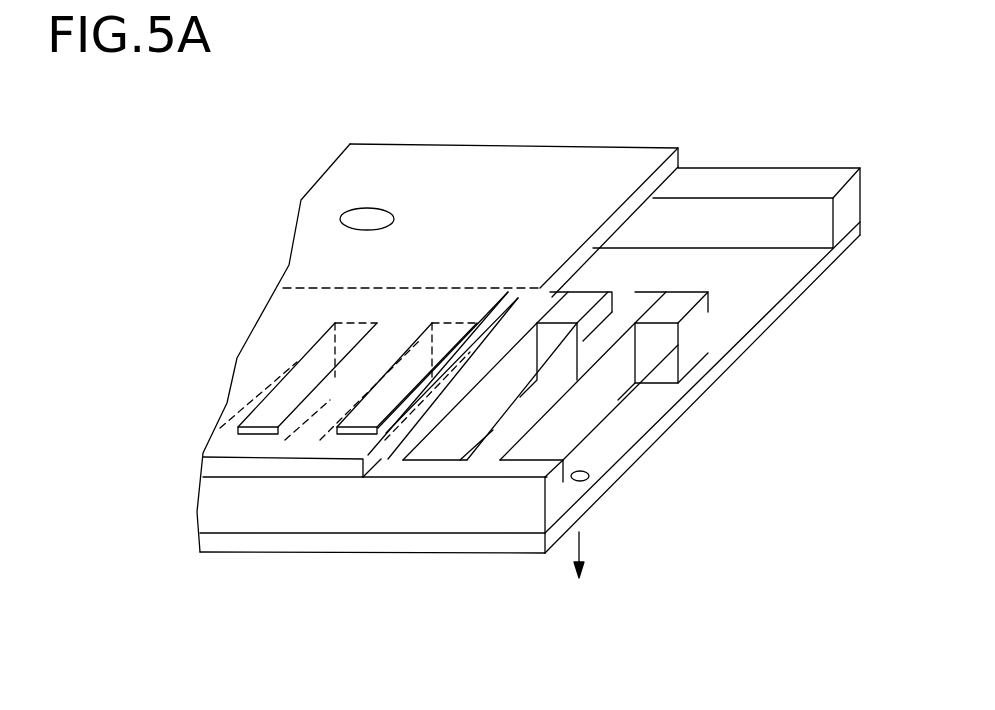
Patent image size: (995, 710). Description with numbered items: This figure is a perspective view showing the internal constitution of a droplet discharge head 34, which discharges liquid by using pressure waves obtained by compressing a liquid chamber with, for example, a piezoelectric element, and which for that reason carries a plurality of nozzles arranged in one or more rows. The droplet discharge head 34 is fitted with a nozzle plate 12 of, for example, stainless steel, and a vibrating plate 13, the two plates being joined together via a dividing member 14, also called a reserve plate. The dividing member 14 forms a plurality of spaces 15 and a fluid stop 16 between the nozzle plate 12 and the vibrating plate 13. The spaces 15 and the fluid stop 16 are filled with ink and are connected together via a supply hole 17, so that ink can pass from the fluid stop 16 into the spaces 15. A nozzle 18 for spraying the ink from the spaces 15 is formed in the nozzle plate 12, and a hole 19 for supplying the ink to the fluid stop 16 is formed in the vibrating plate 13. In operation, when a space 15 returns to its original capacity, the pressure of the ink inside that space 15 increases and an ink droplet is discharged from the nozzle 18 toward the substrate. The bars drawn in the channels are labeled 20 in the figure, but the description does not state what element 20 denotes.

The droplet discharge head 34 is at (448, 128).
The nozzle plate 12 is at (775, 318).
The vibrating plate 13 is at (388, 455).
The dividing member 14 is at (600, 408).
The spaces 15 is at (513, 368).
The fluid stop 16 is at (753, 262).
The supply hole 17 is at (598, 312).
The nozzle 18 is at (589, 476).
The hole 19 is at (352, 217).
The bridge bars 20 is at (290, 397).